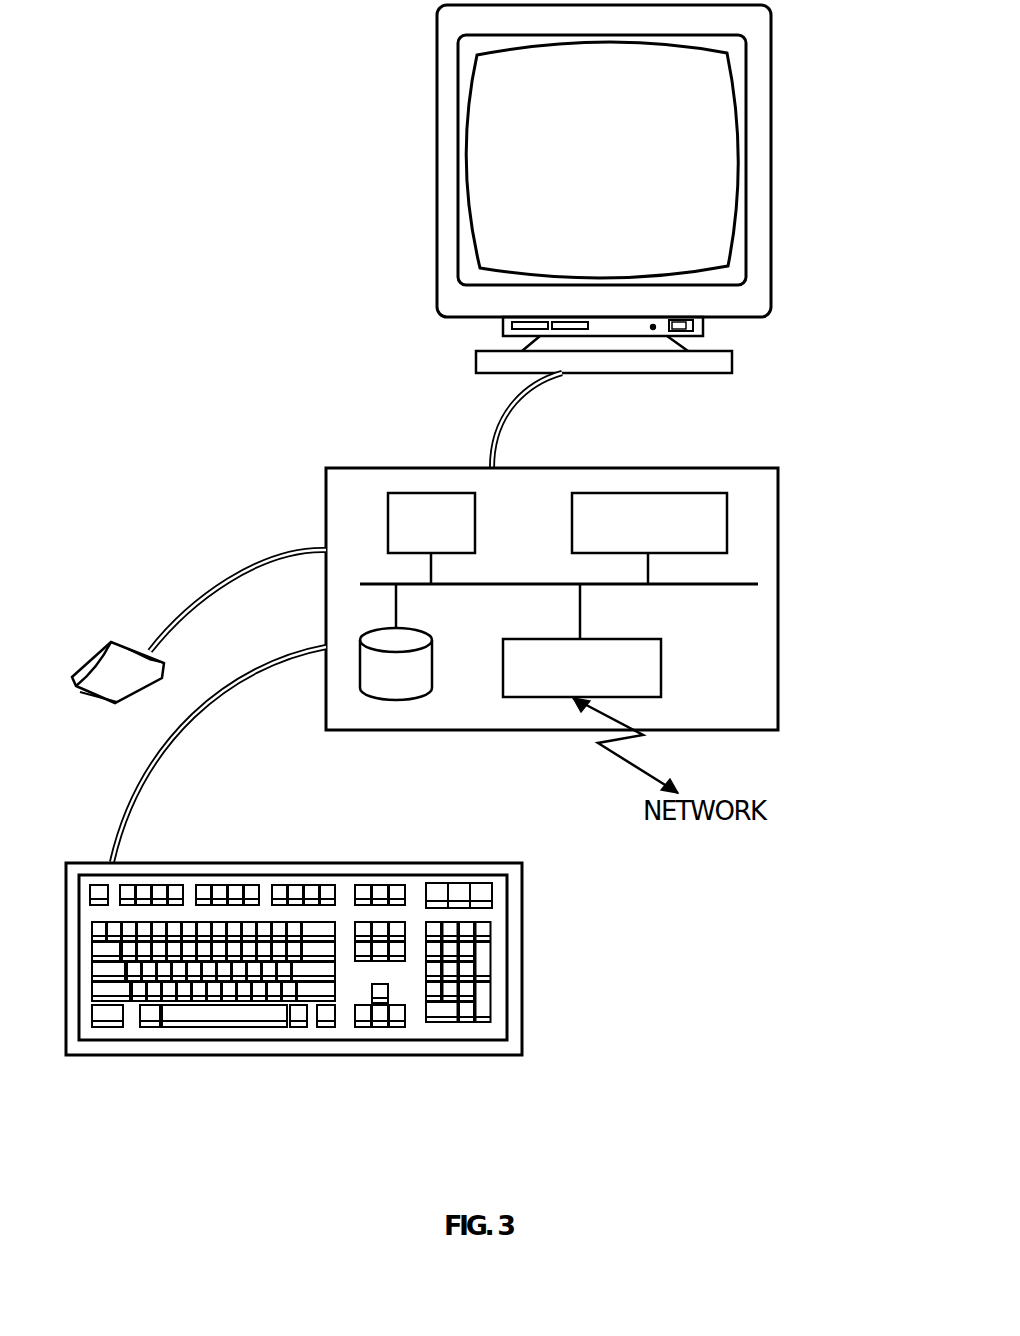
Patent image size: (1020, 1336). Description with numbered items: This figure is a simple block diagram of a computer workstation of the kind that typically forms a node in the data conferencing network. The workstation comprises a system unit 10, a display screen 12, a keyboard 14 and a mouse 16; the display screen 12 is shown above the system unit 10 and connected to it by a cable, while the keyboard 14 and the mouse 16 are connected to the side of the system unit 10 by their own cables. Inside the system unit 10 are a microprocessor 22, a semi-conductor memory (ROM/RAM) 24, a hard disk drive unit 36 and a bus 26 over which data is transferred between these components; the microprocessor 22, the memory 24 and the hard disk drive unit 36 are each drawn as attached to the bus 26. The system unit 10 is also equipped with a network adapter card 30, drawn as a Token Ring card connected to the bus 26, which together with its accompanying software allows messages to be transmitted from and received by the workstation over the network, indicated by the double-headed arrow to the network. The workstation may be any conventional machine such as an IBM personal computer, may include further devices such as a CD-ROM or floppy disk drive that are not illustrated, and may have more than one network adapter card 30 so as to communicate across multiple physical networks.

The system unit 10 is at (653, 468).
The display screen 12 is at (437, 283).
The keyboard 14 is at (338, 862).
The mouse 16 is at (97, 640).
The microprocessor 22 is at (412, 493).
The semi-conductor memory (ROM/RAM) 24 is at (727, 521).
The bus 26 is at (738, 585).
The network adapter card 30 is at (661, 670).
The hard disk drive unit 36 is at (360, 672).